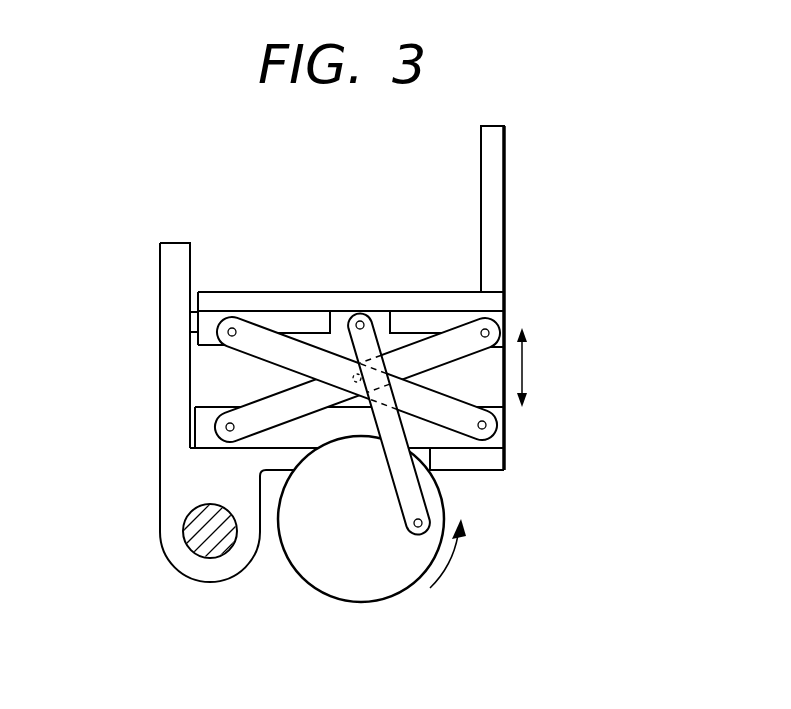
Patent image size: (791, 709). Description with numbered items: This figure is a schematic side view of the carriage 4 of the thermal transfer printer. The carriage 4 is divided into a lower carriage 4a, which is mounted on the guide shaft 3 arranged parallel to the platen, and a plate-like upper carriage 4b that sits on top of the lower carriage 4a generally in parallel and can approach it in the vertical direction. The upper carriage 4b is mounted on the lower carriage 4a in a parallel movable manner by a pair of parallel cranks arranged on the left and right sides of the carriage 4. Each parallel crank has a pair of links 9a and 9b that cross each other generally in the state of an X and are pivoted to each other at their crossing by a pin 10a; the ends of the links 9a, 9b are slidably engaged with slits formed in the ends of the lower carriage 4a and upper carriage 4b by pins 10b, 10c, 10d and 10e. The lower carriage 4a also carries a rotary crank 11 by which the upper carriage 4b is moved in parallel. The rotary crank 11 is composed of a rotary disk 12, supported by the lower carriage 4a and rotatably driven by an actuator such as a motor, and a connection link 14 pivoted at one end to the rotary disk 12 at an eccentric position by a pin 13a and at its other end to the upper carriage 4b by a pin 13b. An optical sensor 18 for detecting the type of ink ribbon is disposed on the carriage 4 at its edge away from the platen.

The guide shaft 3 is at (192, 547).
The carriage 4 is at (156, 294).
The lower carriage 4a is at (170, 525).
The upper carriage 4b is at (470, 297).
The link 9a is at (452, 405).
The link 9b is at (423, 307).
The pin 10a is at (355, 372).
The pin 10b is at (222, 428).
The pin 10c is at (490, 430).
The pin 10d is at (222, 312).
The pin 10e is at (493, 305).
The rotary crank 11 is at (288, 576).
The rotary disk 12 is at (340, 585).
The pin 13a is at (418, 530).
The pin 13b is at (360, 310).
The connection link 14 is at (408, 482).
The optical sensor 18 is at (495, 170).